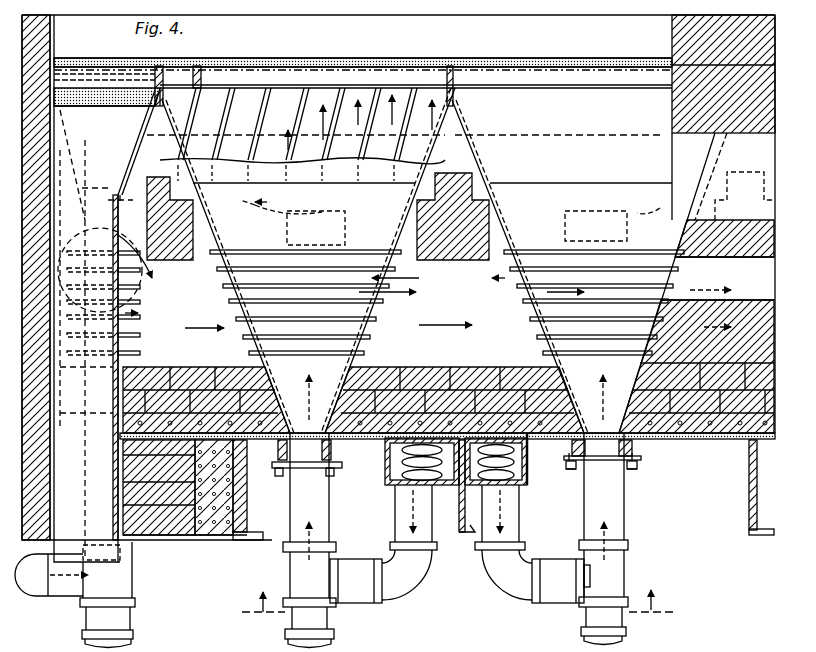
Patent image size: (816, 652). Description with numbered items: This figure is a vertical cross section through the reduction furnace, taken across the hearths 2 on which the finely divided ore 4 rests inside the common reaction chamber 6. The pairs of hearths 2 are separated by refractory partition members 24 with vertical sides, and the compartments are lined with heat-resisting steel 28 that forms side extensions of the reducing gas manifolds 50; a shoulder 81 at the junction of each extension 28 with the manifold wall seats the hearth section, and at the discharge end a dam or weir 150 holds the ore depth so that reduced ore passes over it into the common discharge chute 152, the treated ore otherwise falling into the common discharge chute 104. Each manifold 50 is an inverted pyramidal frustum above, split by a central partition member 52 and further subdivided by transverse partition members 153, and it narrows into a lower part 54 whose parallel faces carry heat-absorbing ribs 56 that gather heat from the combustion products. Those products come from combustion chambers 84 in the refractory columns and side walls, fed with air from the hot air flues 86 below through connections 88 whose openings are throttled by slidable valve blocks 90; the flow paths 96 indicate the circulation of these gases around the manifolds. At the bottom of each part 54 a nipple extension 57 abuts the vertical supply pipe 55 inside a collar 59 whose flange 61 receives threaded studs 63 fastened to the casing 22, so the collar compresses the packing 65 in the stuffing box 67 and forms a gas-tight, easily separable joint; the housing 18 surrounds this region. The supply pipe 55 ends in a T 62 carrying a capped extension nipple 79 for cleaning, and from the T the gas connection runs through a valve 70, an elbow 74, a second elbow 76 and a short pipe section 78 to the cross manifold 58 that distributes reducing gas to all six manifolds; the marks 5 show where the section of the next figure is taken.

The hearths 2 is at (84, 72).
The finely divided ore 4 is at (122, 67).
The reaction chamber 6 is at (398, 25).
The heat-resisting steel 28 is at (486, 86).
The shoulder 81 is at (528, 86).
The dam or weir 150 is at (197, 66).
The partition members 24 is at (682, 105).
The common discharge chute 152 is at (122, 142).
The central partition member 52 is at (217, 110).
The transverse partition members 153 is at (342, 100).
The manifold 50 is at (364, 169).
The lower part of the manifold 54 is at (133, 350).
The combustion chambers 84 is at (460, 201).
The connections 88 is at (346, 215).
The valve blocks 90 is at (322, 211).
The flues 86 is at (596, 295).
The heat-absorbing ribs 56 is at (136, 298).
The flow path 96 is at (121, 277).
The common discharge chute 104 is at (87, 334).
The housing 18 is at (461, 532).
The stuffing box 67 is at (490, 500).
The casing 22 is at (343, 443).
The threaded studs 63 is at (281, 477).
The nipple extension 57 is at (634, 441).
The collar 59 is at (644, 459).
The flange 61 is at (640, 468).
The cross manifold 58 is at (386, 483).
The packing 65 is at (530, 436).
The short pipe section 78 is at (404, 520).
The second elbow 76 is at (418, 582).
The elbow 74 is at (372, 592).
The valve 70 is at (590, 584).
The supply pipe 55 is at (314, 507).
The T 62 is at (287, 560).
The capped extension nipple 79 is at (290, 622).
The section line 5- 5 is at (458, 589).